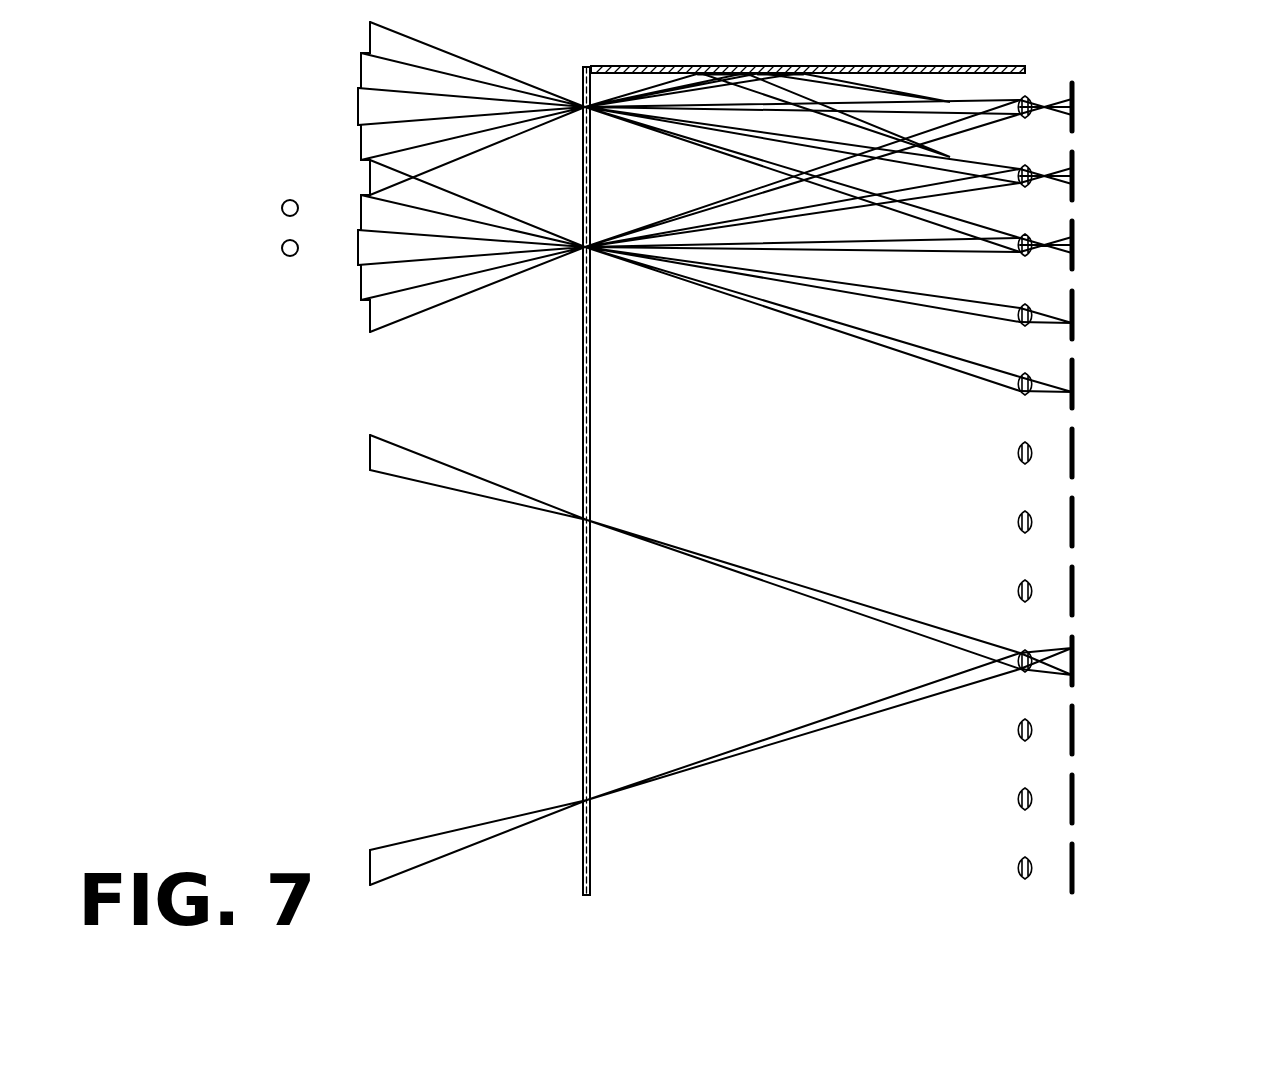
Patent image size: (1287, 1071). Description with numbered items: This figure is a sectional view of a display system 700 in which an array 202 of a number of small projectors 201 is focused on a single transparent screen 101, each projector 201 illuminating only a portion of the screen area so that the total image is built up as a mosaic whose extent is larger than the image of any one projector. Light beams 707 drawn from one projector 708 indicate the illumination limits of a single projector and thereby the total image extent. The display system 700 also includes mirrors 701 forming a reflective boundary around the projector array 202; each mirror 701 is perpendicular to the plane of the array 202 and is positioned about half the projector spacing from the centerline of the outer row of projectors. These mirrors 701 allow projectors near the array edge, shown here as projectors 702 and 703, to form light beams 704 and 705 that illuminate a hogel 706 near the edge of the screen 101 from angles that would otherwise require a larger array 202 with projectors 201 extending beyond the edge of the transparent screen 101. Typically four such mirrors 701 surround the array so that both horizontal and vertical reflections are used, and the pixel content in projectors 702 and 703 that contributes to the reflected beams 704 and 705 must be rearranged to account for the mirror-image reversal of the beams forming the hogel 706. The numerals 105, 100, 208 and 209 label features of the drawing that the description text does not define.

The display system 700 is at (296, 537).
The light emitters 105 is at (234, 397).
The pinhole 100 is at (582, 254).
The transparent screen 101 is at (587, 882).
The hogel 706 is at (580, 102).
The light beam 705 is at (657, 83).
The light beam 704 is at (750, 80).
The mirror 701 is at (983, 65).
The projector 702 is at (1073, 108).
The projector 703 is at (1073, 177).
The array 202 is at (1048, 450).
The projector 201 is at (1145, 575).
The light beams 707 is at (852, 598).
The projector 708 is at (1070, 680).
The light source 208 is at (281, 205).
The light source 209 is at (281, 250).